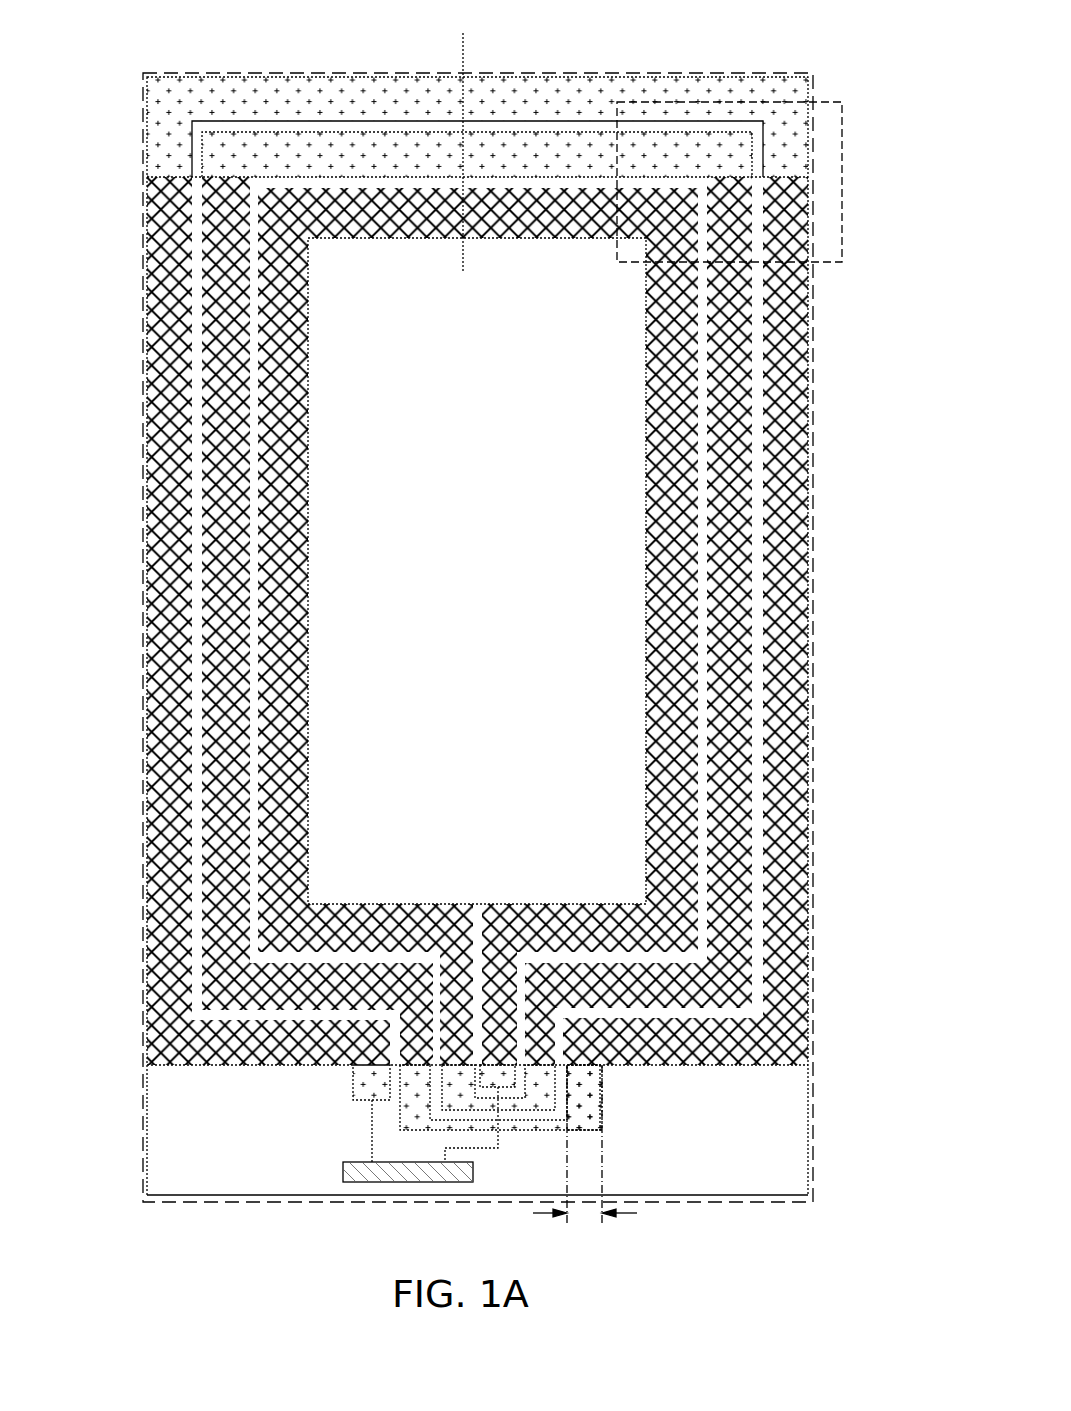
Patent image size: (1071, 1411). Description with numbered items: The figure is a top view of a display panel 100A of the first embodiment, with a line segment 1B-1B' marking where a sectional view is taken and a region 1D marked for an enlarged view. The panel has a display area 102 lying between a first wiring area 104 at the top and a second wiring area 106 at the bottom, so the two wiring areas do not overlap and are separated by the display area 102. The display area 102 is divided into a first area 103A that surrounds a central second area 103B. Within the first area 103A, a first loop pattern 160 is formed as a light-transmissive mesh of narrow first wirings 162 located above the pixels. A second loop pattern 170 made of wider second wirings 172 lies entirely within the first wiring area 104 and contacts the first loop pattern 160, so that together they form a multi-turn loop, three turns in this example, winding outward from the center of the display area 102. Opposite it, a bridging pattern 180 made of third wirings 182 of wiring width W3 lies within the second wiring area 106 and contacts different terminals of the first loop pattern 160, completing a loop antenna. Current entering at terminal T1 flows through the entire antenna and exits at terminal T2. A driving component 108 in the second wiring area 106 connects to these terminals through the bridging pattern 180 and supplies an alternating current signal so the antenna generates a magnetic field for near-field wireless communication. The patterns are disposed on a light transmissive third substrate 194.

The display panel 100A is at (96, 37).
The second loop pattern 170 is at (786, 65).
The second wirings 172 is at (797, 90).
The first wiring area 104 is at (832, 127).
The region 1D is at (862, 197).
The first loop pattern 160 is at (832, 280).
The display area 102 is at (832, 327).
The first wirings 162 is at (808, 353).
The second area 103B is at (618, 475).
The first area 103A is at (802, 505).
The second wiring area 106 is at (834, 1100).
The third substrate 194 is at (203, 1131).
The third wirings 182 is at (585, 1090).
The bridging pattern 180 is at (608, 1122).
The terminal T1 is at (343, 1106).
The terminal T2 is at (512, 1106).
The driving component 108 is at (363, 1172).
The wiring width W3 is at (583, 1215).
The line segment 1B is at (424, 146).
The line segment 1B' is at (421, 272).